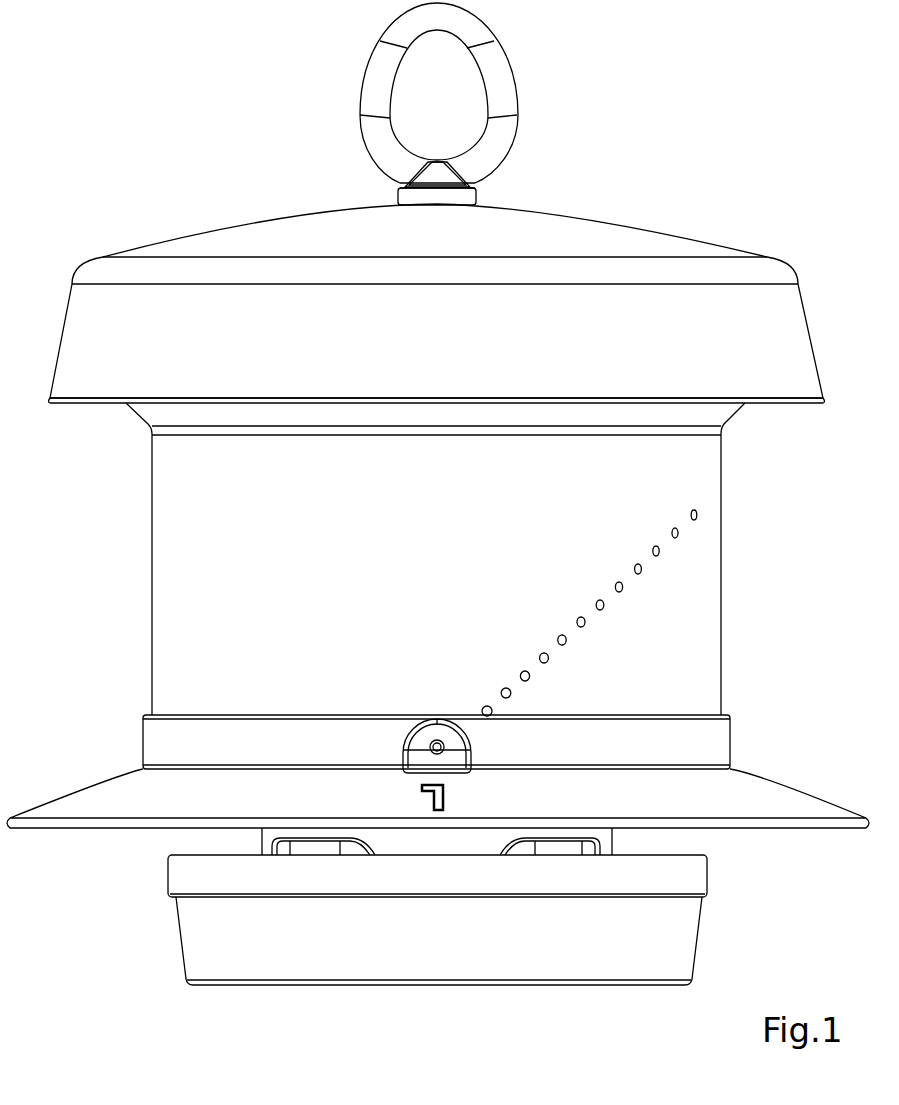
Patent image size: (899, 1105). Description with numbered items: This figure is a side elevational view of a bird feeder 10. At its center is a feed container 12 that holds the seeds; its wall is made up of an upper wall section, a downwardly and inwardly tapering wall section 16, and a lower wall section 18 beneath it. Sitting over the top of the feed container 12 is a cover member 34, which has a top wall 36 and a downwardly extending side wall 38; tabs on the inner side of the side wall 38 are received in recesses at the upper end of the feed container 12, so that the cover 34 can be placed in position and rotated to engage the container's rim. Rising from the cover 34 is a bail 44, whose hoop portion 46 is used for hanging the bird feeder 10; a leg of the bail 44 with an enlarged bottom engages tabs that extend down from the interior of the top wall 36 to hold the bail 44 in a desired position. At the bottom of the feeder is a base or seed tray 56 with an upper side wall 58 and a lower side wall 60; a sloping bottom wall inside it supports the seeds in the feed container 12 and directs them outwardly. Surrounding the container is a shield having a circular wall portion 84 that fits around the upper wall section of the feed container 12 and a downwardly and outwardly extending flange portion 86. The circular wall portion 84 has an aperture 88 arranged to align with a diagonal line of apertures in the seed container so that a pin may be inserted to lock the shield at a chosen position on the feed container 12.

The bird feeder 10 is at (237, 130).
The feed container 12 is at (450, 559).
The downwardly and inwardly tapering wall section 16 is at (137, 418).
The lower wall section 18 is at (693, 668).
The cover member 34 is at (437, 284).
The top wall 36 is at (537, 233).
The side wall 38 is at (454, 371).
The bail 44 is at (429, 104).
The hoop portion 46 is at (490, 55).
The seed tray 56 is at (393, 906).
The upper side wall 58 is at (643, 892).
The lower side wall 60 is at (621, 954).
The circular wall portion 84 is at (663, 751).
The flange portion 86 is at (743, 811).
The aperture 88 is at (444, 749).